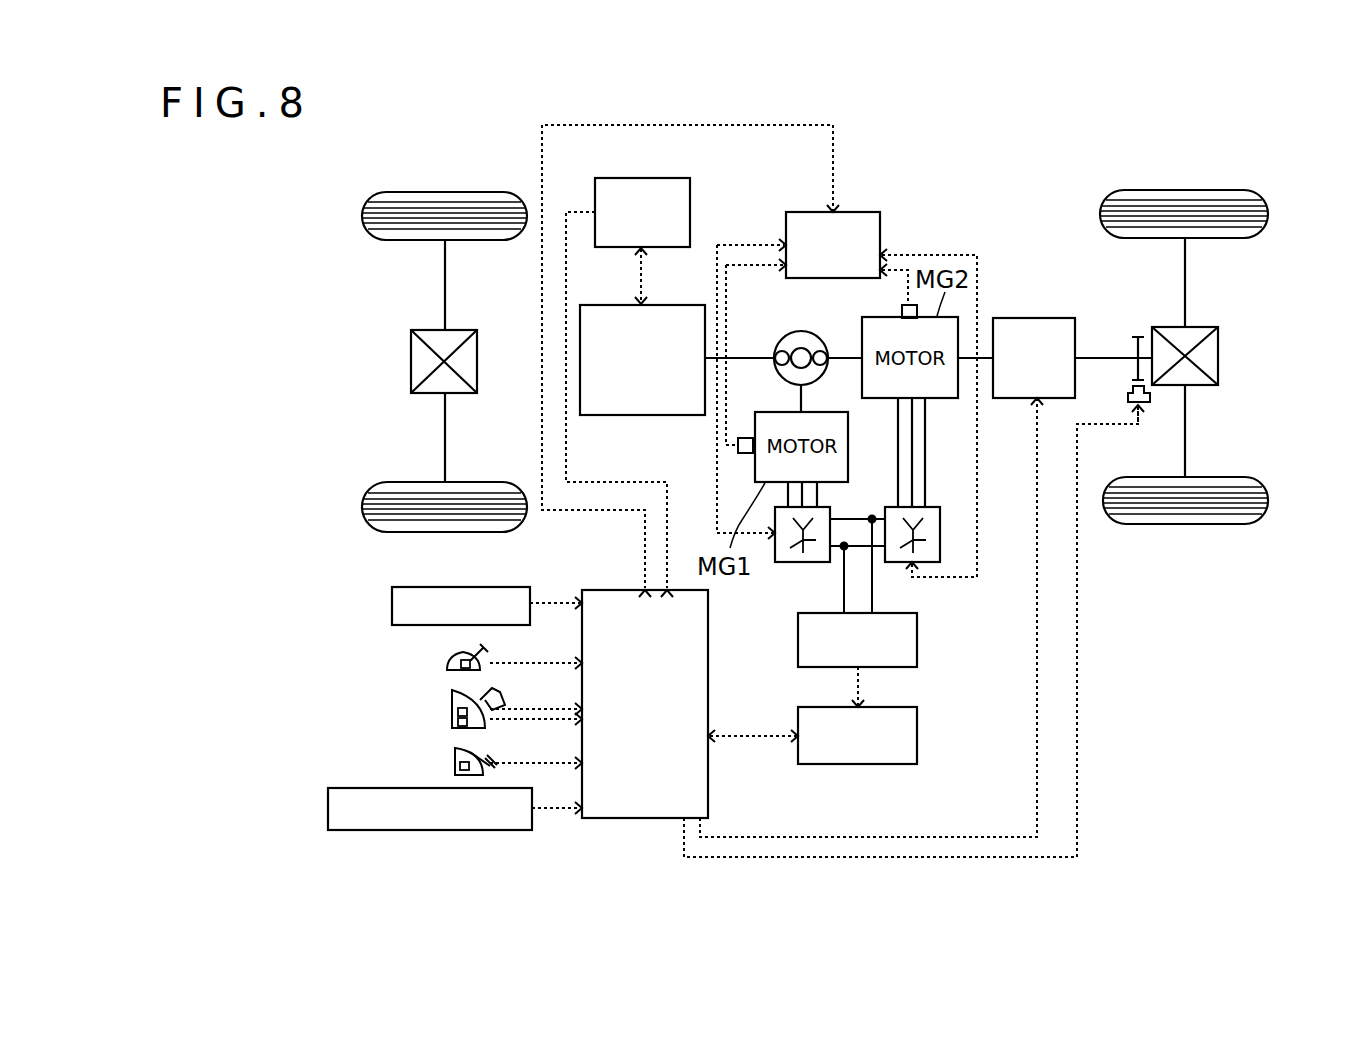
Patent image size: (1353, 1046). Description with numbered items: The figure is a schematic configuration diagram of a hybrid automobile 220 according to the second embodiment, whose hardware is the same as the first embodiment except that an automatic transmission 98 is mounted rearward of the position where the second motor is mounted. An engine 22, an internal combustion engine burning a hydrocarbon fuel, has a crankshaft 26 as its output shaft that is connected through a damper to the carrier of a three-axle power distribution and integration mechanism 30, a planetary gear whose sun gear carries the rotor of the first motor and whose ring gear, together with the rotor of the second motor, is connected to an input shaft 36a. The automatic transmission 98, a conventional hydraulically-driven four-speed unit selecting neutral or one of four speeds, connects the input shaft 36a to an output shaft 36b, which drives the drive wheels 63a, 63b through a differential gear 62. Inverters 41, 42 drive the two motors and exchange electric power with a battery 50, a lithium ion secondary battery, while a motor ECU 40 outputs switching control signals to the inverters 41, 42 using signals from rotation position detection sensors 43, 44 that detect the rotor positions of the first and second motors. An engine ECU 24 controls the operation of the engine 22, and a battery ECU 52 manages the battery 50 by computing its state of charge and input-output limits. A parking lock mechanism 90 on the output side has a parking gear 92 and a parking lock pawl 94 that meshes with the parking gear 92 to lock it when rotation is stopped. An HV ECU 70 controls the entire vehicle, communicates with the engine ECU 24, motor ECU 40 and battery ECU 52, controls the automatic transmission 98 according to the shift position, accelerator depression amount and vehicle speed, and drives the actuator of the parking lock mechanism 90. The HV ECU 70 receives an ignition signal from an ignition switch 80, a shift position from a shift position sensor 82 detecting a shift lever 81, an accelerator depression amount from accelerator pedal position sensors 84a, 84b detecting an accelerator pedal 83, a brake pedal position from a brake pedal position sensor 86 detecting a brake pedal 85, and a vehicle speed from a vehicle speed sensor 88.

The hybrid automobile 220 is at (905, 90).
The engine 22 is at (608, 416).
The engine ECU 24 is at (643, 177).
The crankshaft 26 is at (760, 356).
The power distribution and integration mechanism 30 is at (804, 331).
The input shaft 36a is at (980, 356).
The output shaft 36b is at (1100, 356).
The motor ECU 40 is at (805, 210).
The inverter 41 is at (832, 507).
The inverter 42 is at (935, 507).
The rotation position detection sensor 43 is at (745, 436).
The rotation position detection sensor 44 is at (900, 305).
The battery 50 is at (918, 625).
The battery ECU 52 is at (860, 765).
The differential gear 62 is at (1172, 326).
The drive wheel 63a is at (1186, 190).
The drive wheel 63b is at (1185, 525).
The HV ECU 70 is at (709, 615).
The ignition switch 80 is at (392, 598).
The shift lever 81 is at (478, 654).
The shift position sensor 82 is at (460, 664).
The accelerator pedal 83 is at (475, 696).
The accelerator pedal position sensor 84a is at (457, 711).
The accelerator pedal position sensor 84b is at (457, 722).
The brake pedal 85 is at (470, 755).
The brake pedal position sensor 86 is at (459, 766).
The vehicle speed sensor 88 is at (328, 806).
The parking lock mechanism 90 is at (1158, 418).
The parking gear 92 is at (1128, 370).
The parking lock pawl 94 is at (1152, 398).
The automatic transmission 98 is at (1032, 316).